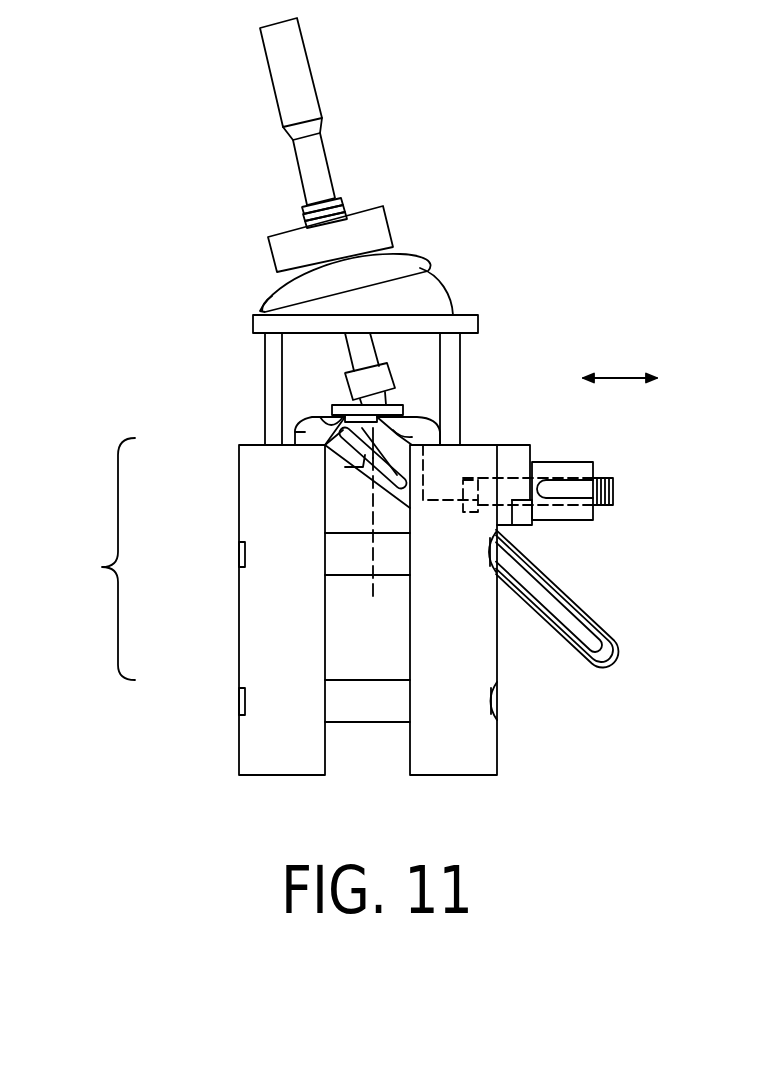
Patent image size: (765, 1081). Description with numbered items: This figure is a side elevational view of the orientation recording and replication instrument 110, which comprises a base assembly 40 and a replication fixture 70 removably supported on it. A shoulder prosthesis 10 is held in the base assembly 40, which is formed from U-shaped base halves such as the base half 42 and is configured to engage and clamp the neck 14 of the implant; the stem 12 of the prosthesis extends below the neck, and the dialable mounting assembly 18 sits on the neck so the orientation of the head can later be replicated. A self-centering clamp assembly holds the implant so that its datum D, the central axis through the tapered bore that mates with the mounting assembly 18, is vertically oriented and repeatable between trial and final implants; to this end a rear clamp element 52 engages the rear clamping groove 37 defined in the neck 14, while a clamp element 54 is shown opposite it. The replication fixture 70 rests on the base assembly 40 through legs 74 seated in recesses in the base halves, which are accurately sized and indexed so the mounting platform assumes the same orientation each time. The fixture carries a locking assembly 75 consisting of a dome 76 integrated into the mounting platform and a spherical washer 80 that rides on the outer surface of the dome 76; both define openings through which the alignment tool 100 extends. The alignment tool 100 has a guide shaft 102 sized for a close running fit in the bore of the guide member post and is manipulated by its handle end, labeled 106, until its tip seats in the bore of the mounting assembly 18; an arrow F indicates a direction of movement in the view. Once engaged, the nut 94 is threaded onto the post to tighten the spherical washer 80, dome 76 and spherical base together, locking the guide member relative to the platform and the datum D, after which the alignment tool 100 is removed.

The shoulder prosthesis 10 is at (578, 626).
The stem 12 is at (550, 633).
The neck 14 is at (343, 460).
The mounting assembly 18 is at (388, 378).
The rear clamping groove 37 is at (305, 432).
The base assembly 40 is at (237, 513).
The base half 42 is at (474, 757).
The rear clamp element 52 is at (295, 430).
The second cradle member 54 is at (430, 432).
The replication fixture 70 is at (383, 268).
The legs 74 is at (270, 372).
The locking assembly 75 is at (354, 259).
The dome 76 is at (426, 299).
The spherical washer 80 is at (477, 310).
The nut 94 is at (374, 213).
The alignment tool 100 is at (316, 153).
The guide shaft 102 is at (348, 345).
The handle grip 106 is at (282, 28).
The orientation recording and replication instrument 110 is at (234, 580).
The datum D is at (372, 590).
The direction of force F is at (615, 378).